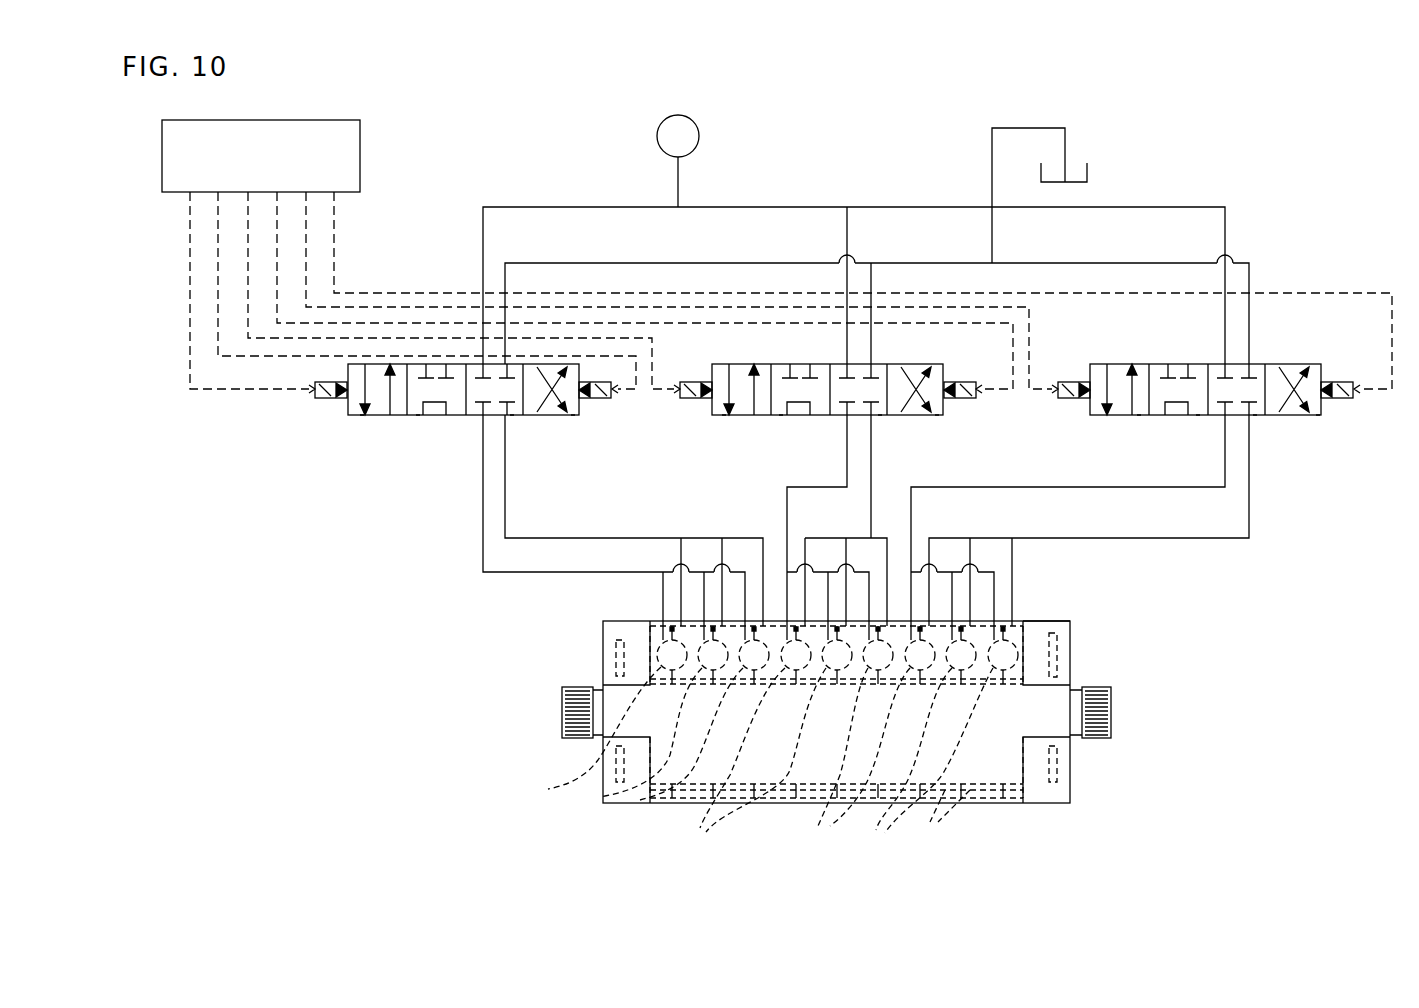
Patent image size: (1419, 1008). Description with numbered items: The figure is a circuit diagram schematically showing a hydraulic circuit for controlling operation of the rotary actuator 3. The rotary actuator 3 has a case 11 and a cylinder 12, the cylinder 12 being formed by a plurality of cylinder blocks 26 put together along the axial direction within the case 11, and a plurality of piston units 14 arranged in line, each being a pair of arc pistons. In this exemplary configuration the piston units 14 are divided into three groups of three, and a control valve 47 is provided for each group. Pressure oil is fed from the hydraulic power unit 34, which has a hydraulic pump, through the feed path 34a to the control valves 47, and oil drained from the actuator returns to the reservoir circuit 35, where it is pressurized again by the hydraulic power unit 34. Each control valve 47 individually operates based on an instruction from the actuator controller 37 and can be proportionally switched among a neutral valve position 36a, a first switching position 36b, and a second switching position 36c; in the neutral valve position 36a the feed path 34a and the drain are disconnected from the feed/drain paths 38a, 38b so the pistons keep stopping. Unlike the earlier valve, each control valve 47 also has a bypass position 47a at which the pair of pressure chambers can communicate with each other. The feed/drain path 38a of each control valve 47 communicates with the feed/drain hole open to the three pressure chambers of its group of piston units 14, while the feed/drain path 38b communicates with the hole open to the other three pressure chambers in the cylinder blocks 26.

The rotary actuator 3 is at (887, 714).
The case 11 is at (963, 803).
The cylinder 12 is at (1021, 625).
The piston unit 14 is at (640, 795).
The cylinder block 26 is at (796, 761).
The hydraulic power unit 34 is at (696, 118).
The feed path 34a is at (593, 207).
The reservoir circuit 35 is at (1108, 134).
The neutral valve position 36a is at (512, 415).
The first switching position 36b is at (573, 415).
The second switching position 36c is at (362, 415).
The actuator controller 37 is at (327, 121).
The feed/drain path 38a is at (505, 470).
The feed/drain path 38b is at (482, 443).
The control valve 47 is at (326, 436).
The bypass position 47a is at (418, 415).